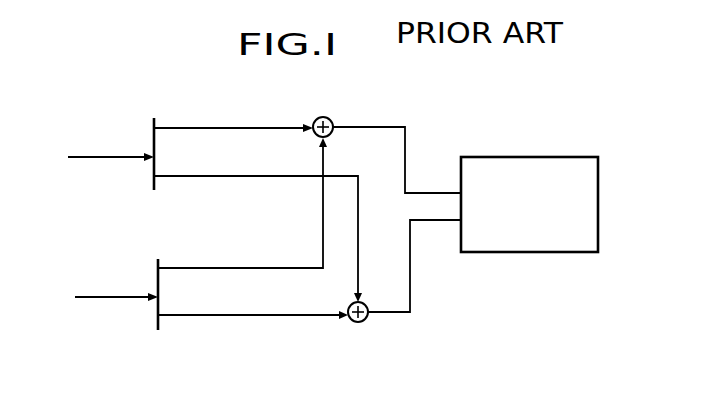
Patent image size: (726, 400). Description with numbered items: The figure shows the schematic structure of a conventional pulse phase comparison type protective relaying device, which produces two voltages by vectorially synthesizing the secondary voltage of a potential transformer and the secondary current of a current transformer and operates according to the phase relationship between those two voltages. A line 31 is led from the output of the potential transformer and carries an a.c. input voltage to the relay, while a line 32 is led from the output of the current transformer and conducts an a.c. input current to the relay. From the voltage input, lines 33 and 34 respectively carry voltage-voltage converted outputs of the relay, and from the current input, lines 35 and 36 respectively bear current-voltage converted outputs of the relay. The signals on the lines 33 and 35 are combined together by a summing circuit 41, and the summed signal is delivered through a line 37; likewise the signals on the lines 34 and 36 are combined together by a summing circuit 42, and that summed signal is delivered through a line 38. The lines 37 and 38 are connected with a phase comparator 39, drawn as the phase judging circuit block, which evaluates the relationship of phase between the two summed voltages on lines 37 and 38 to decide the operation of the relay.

The line 31 is at (98, 158).
The line 32 is at (104, 299).
The line 33 is at (247, 126).
The line 34 is at (225, 182).
The line 35 is at (278, 263).
The line 36 is at (251, 322).
The line 37 is at (413, 133).
The line 38 is at (398, 315).
The phase comparator 39 is at (515, 254).
The summing circuit 41 is at (324, 116).
The summing circuit 42 is at (355, 323).